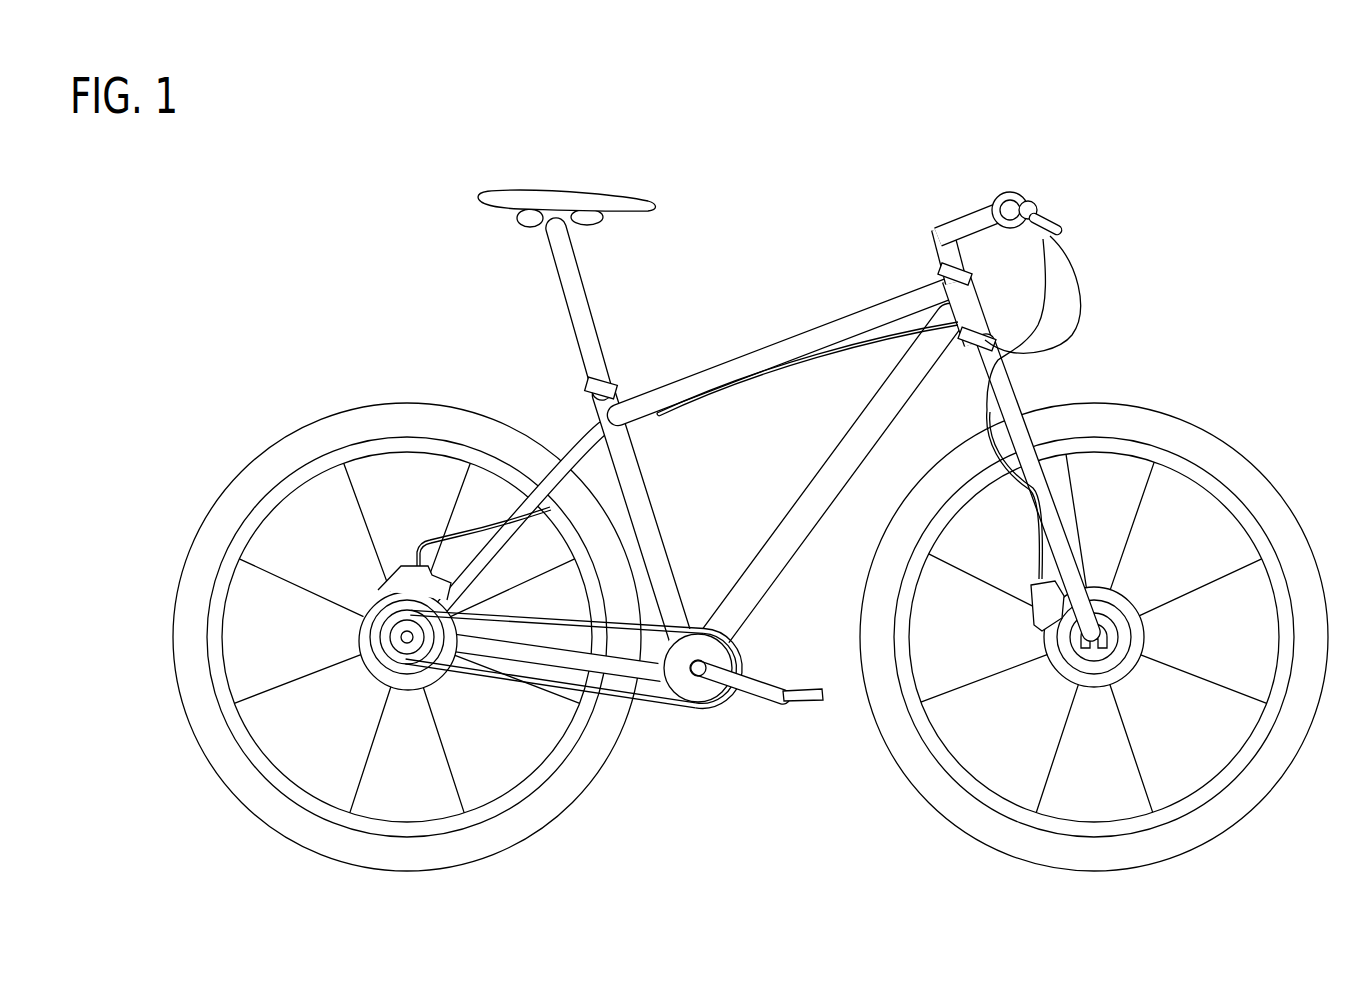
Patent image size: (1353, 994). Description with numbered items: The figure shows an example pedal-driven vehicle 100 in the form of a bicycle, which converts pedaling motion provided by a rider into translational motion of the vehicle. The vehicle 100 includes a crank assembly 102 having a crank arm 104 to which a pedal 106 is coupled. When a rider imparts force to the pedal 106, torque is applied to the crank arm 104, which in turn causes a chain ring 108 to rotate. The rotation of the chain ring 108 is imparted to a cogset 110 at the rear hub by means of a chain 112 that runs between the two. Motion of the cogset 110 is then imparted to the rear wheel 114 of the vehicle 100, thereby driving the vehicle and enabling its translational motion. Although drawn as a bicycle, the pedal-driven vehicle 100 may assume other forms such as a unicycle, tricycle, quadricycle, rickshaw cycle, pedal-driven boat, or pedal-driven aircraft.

The pedal-driven vehicle 100 is at (792, 124).
The crank assembly 102 is at (757, 656).
The crank arm 104 is at (744, 690).
The pedal 106 is at (822, 695).
The chain ring 108 is at (703, 698).
The cogset 110 is at (388, 676).
The chain 112 is at (712, 708).
The rear wheel 114 is at (389, 410).